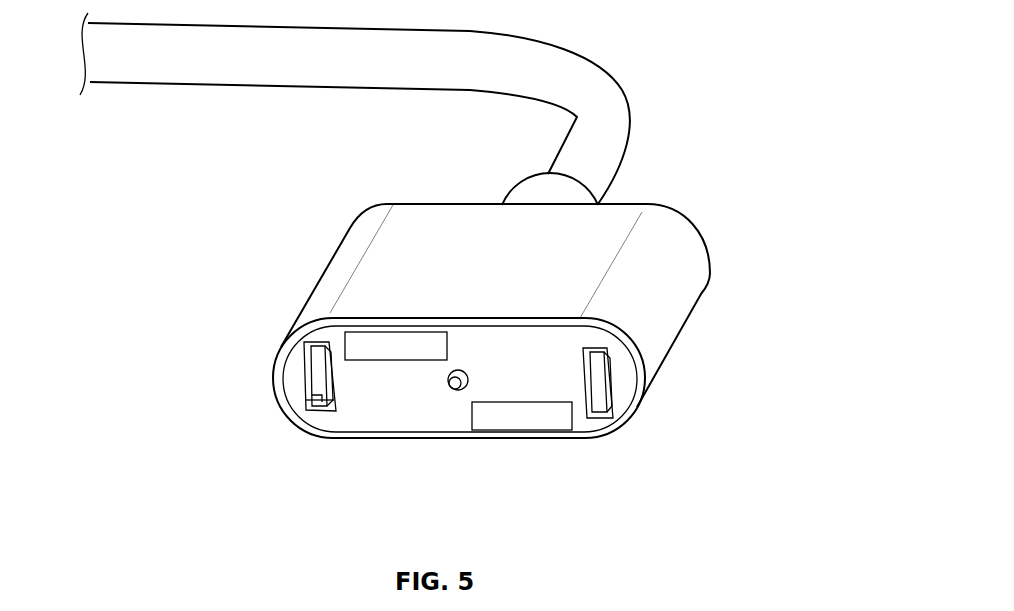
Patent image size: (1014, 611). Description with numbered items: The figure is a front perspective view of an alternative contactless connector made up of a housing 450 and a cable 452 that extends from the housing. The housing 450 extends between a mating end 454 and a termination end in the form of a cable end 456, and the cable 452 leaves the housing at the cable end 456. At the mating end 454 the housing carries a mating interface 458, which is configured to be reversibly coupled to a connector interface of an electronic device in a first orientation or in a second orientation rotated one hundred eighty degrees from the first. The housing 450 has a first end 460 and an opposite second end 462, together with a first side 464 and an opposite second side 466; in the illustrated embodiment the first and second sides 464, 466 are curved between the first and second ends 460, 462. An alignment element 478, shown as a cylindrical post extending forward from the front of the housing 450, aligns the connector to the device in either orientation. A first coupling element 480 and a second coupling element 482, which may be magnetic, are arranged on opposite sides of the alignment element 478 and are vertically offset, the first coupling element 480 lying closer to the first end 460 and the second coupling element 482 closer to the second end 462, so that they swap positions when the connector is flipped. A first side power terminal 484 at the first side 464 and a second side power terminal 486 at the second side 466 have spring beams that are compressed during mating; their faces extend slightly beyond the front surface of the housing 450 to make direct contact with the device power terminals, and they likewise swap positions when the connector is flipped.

The housing 450 is at (607, 228).
The cable 452 is at (598, 88).
The mating end 454 is at (391, 433).
The cable end 456 is at (443, 196).
The mating interface 458 is at (292, 380).
The first end 460 is at (377, 273).
The second end 462 is at (348, 440).
The first side 464 is at (273, 358).
The second side 466 is at (652, 372).
The alignment element 478 is at (455, 388).
The first coupling element 480 is at (367, 343).
The second coupling element 482 is at (547, 417).
The first side power terminal 484 is at (317, 400).
The second side power terminal 486 is at (598, 397).